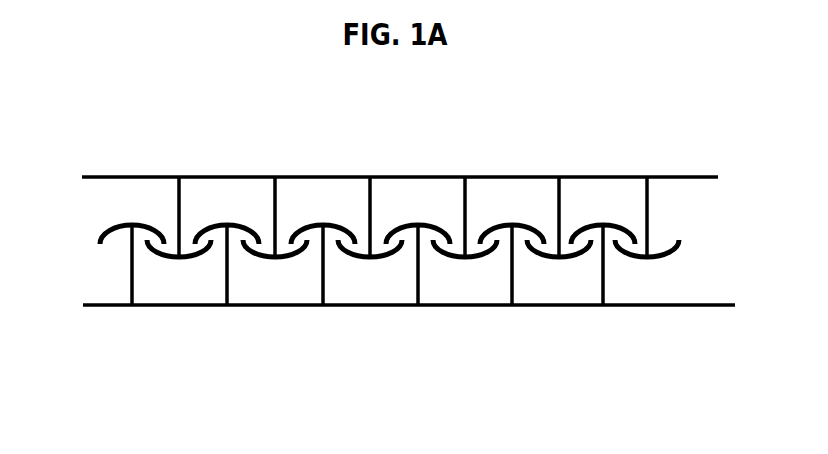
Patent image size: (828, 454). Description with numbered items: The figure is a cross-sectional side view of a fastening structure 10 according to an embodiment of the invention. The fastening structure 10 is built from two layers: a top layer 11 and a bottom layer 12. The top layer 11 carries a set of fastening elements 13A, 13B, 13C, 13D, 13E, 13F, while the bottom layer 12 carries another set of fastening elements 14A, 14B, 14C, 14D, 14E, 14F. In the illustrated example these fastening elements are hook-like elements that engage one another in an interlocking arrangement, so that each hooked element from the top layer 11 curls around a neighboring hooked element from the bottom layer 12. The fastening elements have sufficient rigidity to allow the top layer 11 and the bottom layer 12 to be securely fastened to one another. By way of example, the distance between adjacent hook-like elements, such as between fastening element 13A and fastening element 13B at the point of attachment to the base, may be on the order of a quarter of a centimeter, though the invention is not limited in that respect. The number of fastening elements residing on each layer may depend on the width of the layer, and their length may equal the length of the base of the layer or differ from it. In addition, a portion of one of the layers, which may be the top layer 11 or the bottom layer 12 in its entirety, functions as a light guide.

The fastening structure 10 is at (503, 128).
The top layer 11 is at (82, 177).
The bottom layer 12 is at (103, 306).
The fastening element 13A is at (158, 258).
The fastening element 13B is at (255, 258).
The fastening element 13C is at (350, 258).
The fastening element 13D is at (445, 258).
The fastening element 13E is at (540, 258).
The fastening element 13F is at (628, 258).
The fastening element 14A is at (140, 225).
The fastening element 14B is at (244, 225).
The fastening element 14C is at (342, 225).
The fastening element 14D is at (400, 225).
The fastening element 14E is at (502, 225).
The fastening element 14F is at (590, 225).